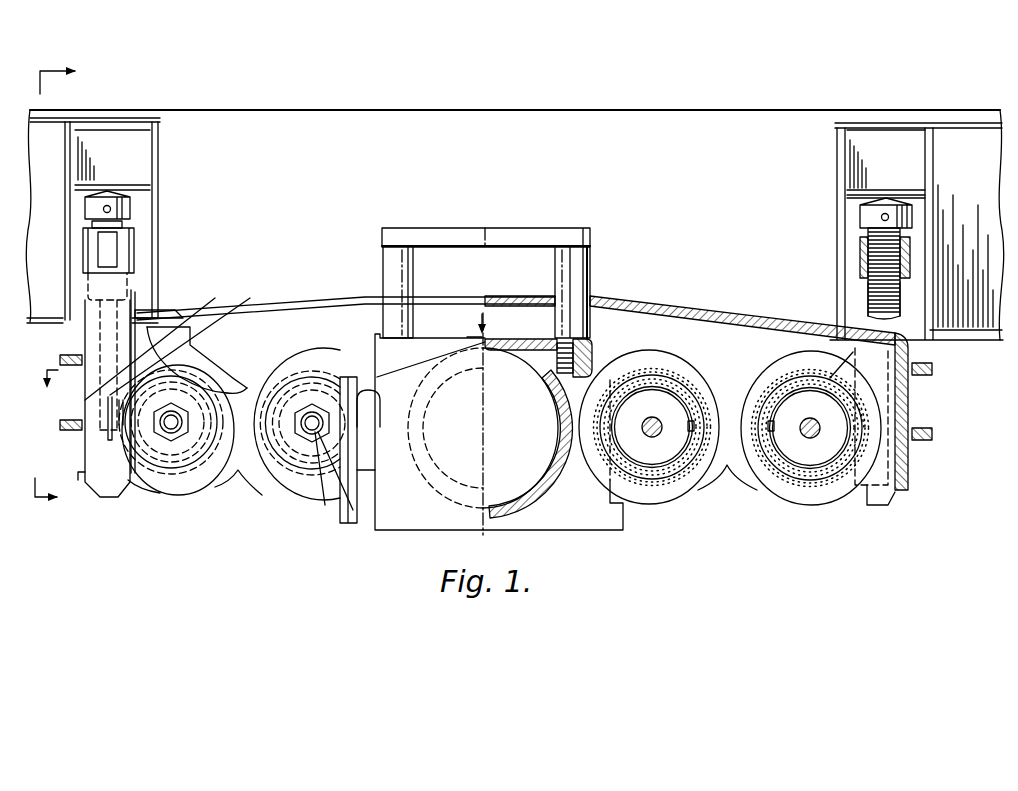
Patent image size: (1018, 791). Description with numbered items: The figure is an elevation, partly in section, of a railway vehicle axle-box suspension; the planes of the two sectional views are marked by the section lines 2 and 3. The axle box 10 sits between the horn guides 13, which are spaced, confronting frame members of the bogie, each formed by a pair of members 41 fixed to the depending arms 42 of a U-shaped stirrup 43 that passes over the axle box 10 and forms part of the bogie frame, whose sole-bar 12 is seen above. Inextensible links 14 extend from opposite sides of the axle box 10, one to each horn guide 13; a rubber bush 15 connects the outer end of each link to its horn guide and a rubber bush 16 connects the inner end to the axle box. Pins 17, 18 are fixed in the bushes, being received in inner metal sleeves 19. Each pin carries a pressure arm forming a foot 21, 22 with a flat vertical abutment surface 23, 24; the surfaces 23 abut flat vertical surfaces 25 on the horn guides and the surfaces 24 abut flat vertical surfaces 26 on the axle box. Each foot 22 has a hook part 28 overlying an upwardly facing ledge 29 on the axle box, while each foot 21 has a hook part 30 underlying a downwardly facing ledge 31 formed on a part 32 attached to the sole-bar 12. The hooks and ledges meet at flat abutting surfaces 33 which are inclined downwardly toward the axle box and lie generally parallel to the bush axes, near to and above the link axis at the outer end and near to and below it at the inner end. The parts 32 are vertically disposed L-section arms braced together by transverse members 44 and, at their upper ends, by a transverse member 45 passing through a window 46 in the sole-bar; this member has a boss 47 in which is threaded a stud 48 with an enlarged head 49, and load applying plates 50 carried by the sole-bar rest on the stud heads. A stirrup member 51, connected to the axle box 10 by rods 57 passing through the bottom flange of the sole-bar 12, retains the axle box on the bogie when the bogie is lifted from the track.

The section line 2- 2 is at (265, 350).
The section line 3- 3 is at (66, 284).
The axle box 10 is at (594, 350).
The sole-bar 12 is at (47, 136).
The horn guides 13 is at (830, 378).
The inextensible links 14 is at (256, 383).
The rubber bush 15 is at (250, 388).
The rubber bush 16 is at (327, 372).
The pin 17 is at (195, 370).
The pin 18 is at (301, 378).
The inner metal sleeves 19 is at (638, 386).
The foot 21 is at (190, 334).
The foot 22 is at (338, 472).
The abutment surface 23 is at (160, 367).
The abutment surface 24 is at (362, 467).
The flat vertically extending surfaces 25 is at (165, 360).
The flat vertically extending surfaces 26 is at (357, 493).
The hook part 28 is at (362, 418).
The upwardly facing ledge 29 is at (352, 470).
The hook part 30 is at (108, 497).
The downwardly facing ledge 31 is at (106, 437).
The part 32 is at (120, 413).
The abutting surfaces 33 is at (178, 418).
The members 41 is at (136, 488).
The depending arms 42 is at (84, 472).
The U-shaped stirrup 43 is at (312, 302).
The transverse members 44 is at (60, 358).
The transverse member 45 is at (103, 243).
The window 46 is at (128, 280).
The boss 47 is at (135, 247).
The stud 48 is at (122, 226).
The enlarged head 49 is at (122, 210).
The load applying plates 50 is at (137, 187).
The stirrup member 51 is at (492, 228).
The rods 57 is at (398, 268).